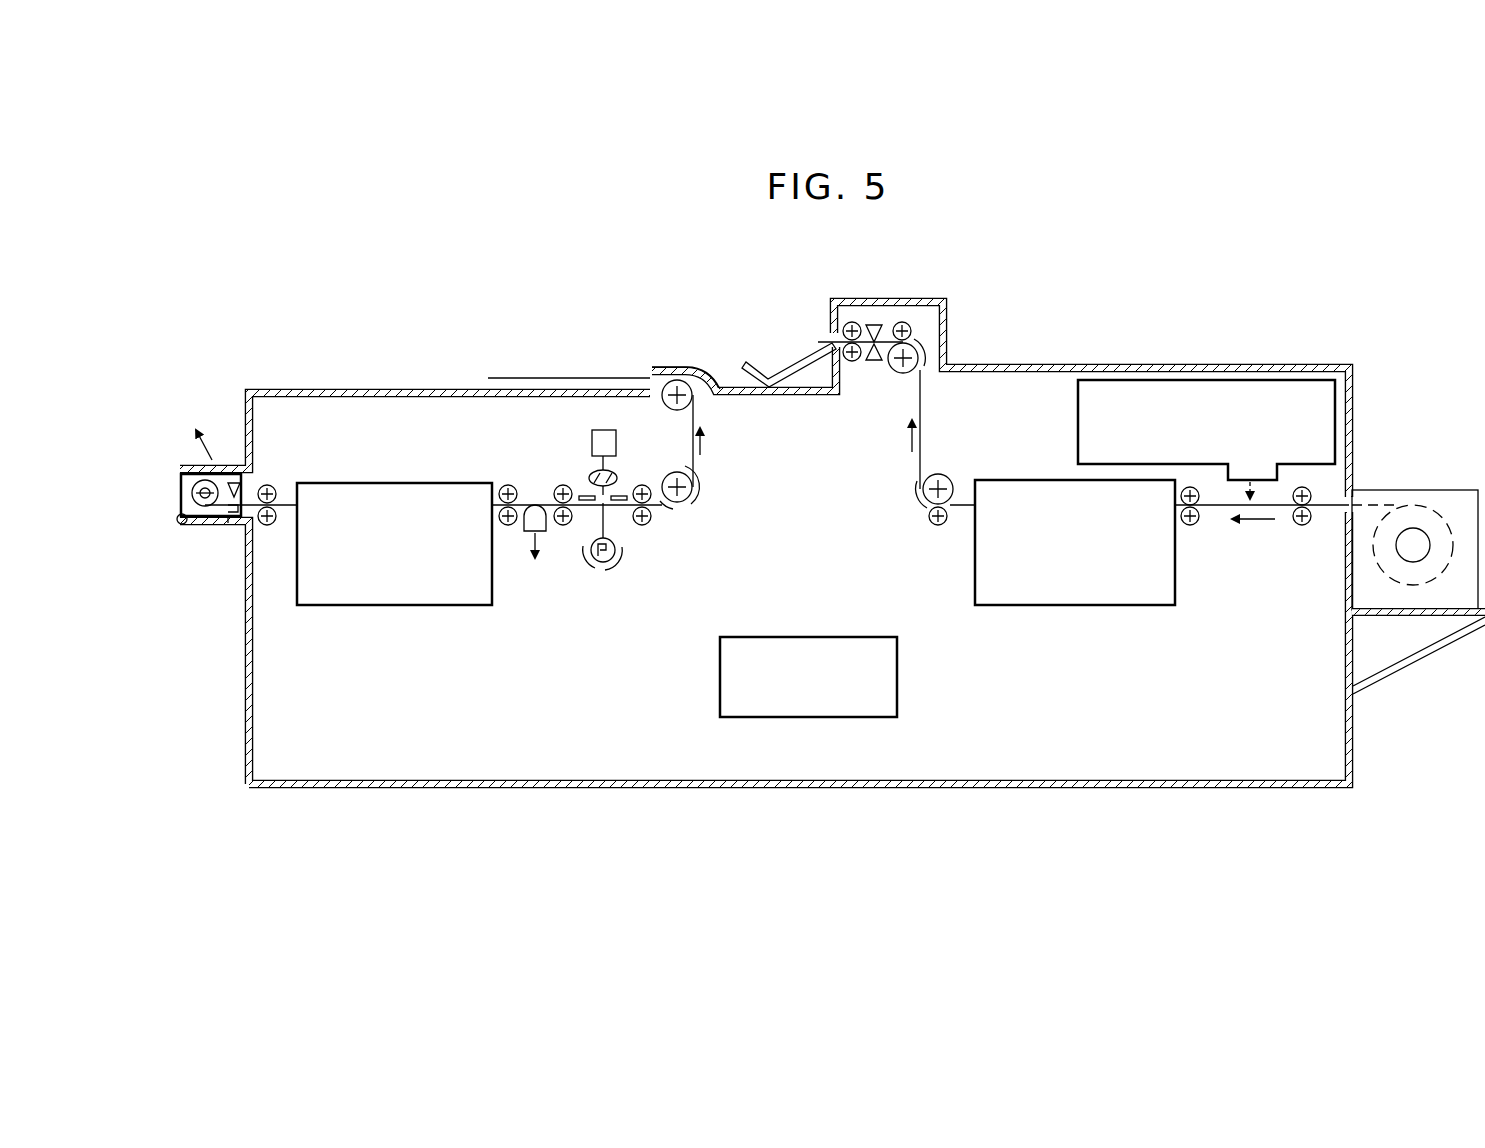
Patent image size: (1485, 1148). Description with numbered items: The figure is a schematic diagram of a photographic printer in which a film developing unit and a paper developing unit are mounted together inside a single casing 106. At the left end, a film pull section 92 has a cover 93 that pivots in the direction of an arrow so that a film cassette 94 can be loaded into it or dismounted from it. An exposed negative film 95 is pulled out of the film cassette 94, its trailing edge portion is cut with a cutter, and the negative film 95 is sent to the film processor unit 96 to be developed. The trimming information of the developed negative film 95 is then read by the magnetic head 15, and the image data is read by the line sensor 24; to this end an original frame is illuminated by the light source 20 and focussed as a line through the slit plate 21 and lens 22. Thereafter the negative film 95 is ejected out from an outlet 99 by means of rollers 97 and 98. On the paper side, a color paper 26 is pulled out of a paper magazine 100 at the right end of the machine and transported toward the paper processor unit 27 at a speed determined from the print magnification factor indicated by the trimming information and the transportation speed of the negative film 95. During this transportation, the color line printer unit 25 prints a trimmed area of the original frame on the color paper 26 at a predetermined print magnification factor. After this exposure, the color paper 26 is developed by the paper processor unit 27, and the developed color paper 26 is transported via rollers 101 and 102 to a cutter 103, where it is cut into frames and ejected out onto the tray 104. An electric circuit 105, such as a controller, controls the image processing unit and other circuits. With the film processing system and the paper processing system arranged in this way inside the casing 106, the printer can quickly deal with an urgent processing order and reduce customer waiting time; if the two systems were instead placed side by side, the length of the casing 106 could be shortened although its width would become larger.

The magnetic head 15 is at (530, 506).
The light source 20 is at (585, 557).
The slit plate 21 is at (622, 492).
The lens 22 is at (588, 475).
The image read circuit 24 is at (592, 440).
The color line printer unit 25 is at (1078, 410).
The color paper 26 is at (920, 418).
The paper processor unit 27 is at (1085, 606).
The film pull section 92 is at (203, 524).
The cover 93 is at (222, 467).
The film cassette 94 is at (195, 468).
The negative film 95 is at (238, 521).
The film processor unit 96 is at (387, 606).
The roller 97 is at (690, 513).
The roller 98 is at (684, 373).
The outlet 99 is at (652, 372).
The paper magazine 100 is at (1415, 490).
The roller 101 is at (952, 478).
The roller 102 is at (890, 375).
The cutter 103 is at (877, 330).
The tray 104 is at (795, 367).
The electric circuit 105 is at (826, 636).
The casing 106 is at (645, 790).